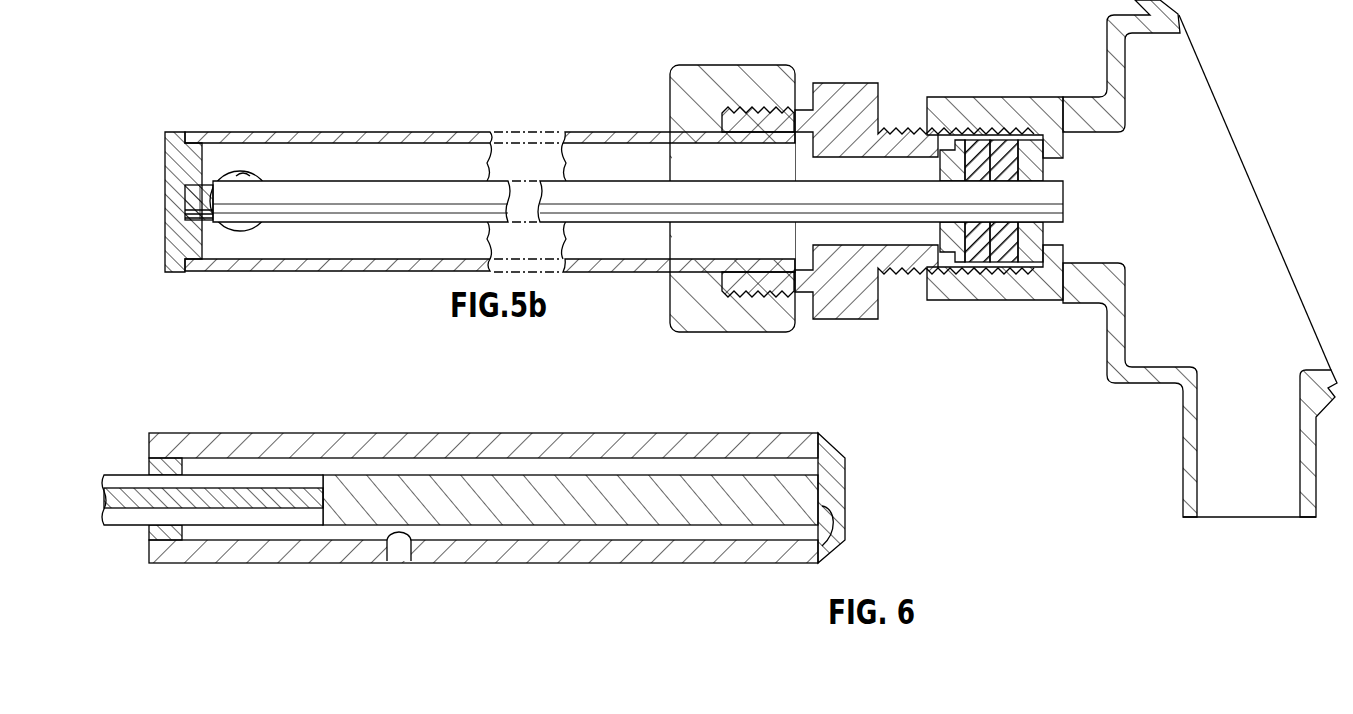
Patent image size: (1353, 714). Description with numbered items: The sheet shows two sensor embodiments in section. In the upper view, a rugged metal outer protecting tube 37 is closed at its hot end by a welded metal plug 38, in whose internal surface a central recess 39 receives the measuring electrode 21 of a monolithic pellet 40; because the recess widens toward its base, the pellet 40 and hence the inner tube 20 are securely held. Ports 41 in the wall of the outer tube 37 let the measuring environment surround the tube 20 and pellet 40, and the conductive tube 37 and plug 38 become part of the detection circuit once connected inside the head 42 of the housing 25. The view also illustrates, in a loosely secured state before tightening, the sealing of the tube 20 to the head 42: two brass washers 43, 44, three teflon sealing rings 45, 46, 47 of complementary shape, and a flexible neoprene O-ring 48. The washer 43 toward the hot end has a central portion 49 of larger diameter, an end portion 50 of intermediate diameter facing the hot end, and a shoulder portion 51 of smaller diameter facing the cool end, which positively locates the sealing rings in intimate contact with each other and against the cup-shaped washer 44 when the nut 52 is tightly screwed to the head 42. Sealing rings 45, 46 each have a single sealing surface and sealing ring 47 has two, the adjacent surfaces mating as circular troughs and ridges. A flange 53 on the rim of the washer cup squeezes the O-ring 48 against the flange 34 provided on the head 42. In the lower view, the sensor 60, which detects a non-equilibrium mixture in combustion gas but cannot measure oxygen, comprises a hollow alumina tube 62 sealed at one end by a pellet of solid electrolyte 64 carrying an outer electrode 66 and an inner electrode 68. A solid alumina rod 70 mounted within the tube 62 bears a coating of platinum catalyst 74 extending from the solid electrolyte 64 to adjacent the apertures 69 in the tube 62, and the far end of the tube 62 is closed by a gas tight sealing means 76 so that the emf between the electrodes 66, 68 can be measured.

In FIG. 5b, the tube 20 is at (362, 203).
In FIG. 5b, the measuring electrode 21 is at (198, 194).
In FIG. 5b, the housing 25 is at (1130, 397).
In FIG. 5b, the flange 34 is at (1050, 263).
In FIG. 5b, the outer protecting tube 37 is at (616, 131).
In FIG. 5b, the plug 38 is at (165, 140).
In FIG. 5b, the recess 39 is at (187, 195).
In FIG. 5b, the monolithic pellet 40 is at (208, 197).
In FIG. 5b, the ports 41 is at (237, 170).
In FIG. 5b, the head 42 is at (1180, 368).
In FIG. 5b, the washer 43 is at (950, 150).
In FIG. 5b, the washer 44 is at (1050, 150).
In FIG. 5b, the sealing ring 45 is at (975, 140).
In FIG. 5b, the sealing ring 46 is at (1003, 141).
In FIG. 5b, the sealing ring 47 is at (1030, 145).
In FIG. 5b, the O-ring 48 is at (1030, 258).
In FIG. 5b, the central portion 49 is at (958, 258).
In FIG. 5b, the end portion 50 is at (950, 232).
In FIG. 5b, the shoulder portion 51 is at (977, 258).
In FIG. 5b, the nut 52 is at (850, 100).
In FIG. 5b, the flange 53 is at (1003, 258).
In FIG. 6, the sensor 60 is at (510, 487).
In FIG. 6, the hollow alumina tube 62 is at (598, 445).
In FIG. 6, the pellet of solid electrolyte 64 is at (832, 480).
In FIG. 6, the electrode 66 is at (846, 535).
In FIG. 6, the electrode 68 is at (820, 556).
In FIG. 6, the apertures 69 is at (399, 548).
In FIG. 6, the solid alumina rod 70 is at (230, 486).
In FIG. 6, the coating of platinum catalyst 74 is at (400, 490).
In FIG. 6, the gas tight sealing means 76 is at (152, 463).